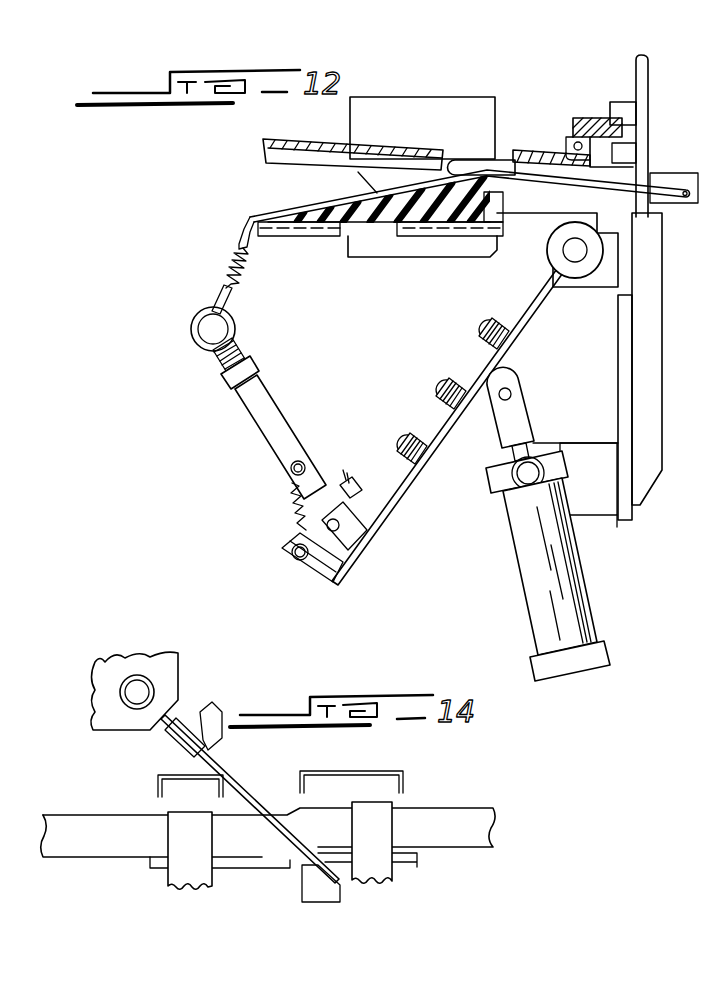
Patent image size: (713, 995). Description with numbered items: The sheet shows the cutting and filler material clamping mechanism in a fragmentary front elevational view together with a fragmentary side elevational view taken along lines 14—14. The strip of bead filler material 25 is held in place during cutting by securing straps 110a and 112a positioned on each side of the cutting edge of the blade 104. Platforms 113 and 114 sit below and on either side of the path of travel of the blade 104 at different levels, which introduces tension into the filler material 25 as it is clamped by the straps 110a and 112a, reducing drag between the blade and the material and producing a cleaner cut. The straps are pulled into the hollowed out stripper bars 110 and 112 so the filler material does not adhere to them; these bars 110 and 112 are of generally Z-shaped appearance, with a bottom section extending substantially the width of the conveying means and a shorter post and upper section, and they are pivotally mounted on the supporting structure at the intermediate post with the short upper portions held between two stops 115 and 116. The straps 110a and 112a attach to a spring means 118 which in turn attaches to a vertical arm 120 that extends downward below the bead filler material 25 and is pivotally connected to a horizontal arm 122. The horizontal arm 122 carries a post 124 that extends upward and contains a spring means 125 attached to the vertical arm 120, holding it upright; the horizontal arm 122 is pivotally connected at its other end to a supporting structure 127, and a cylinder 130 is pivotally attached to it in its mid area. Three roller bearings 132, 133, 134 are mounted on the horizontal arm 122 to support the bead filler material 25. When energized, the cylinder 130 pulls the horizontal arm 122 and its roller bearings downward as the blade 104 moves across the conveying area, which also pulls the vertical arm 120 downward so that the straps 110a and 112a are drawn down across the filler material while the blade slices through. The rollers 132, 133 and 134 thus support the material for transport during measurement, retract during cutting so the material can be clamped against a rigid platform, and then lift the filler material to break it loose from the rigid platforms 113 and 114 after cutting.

In FIG. 12, the section lines 14— 14 is at (233, 125).
In FIG. 12, the strip of bead filler material 25 is at (353, 228).
In FIG. 14, the strip of bead filler material 25 is at (118, 828).
In FIG. 14, the blade 104 is at (282, 767).
In FIG. 14, the stripper bar 110 is at (170, 772).
In FIG. 14, the securing strap 110a is at (197, 883).
In FIG. 14, the stripper bar 112 is at (383, 775).
In FIG. 14, the securing strap 112a is at (375, 872).
In FIG. 14, the platform 113 is at (150, 867).
In FIG. 14, the platform 114 is at (415, 860).
In FIG. 12, the stop 115 is at (623, 106).
In FIG. 12, the stop 116 is at (623, 157).
In FIG. 12, the spring means 118 is at (233, 270).
In FIG. 12, the vertical arm 120 is at (270, 407).
In FIG. 12, the horizontal arm 122 is at (392, 497).
In FIG. 12, the post 124 is at (310, 568).
In FIG. 12, the spring means 125 is at (300, 513).
In FIG. 12, the supporting structure 127 is at (602, 290).
In FIG. 12, the cylinder 130 is at (534, 524).
In FIG. 12, the roller bearing 132 is at (413, 430).
In FIG. 12, the roller bearing 133 is at (460, 370).
In FIG. 12, the roller bearing 134 is at (503, 313).